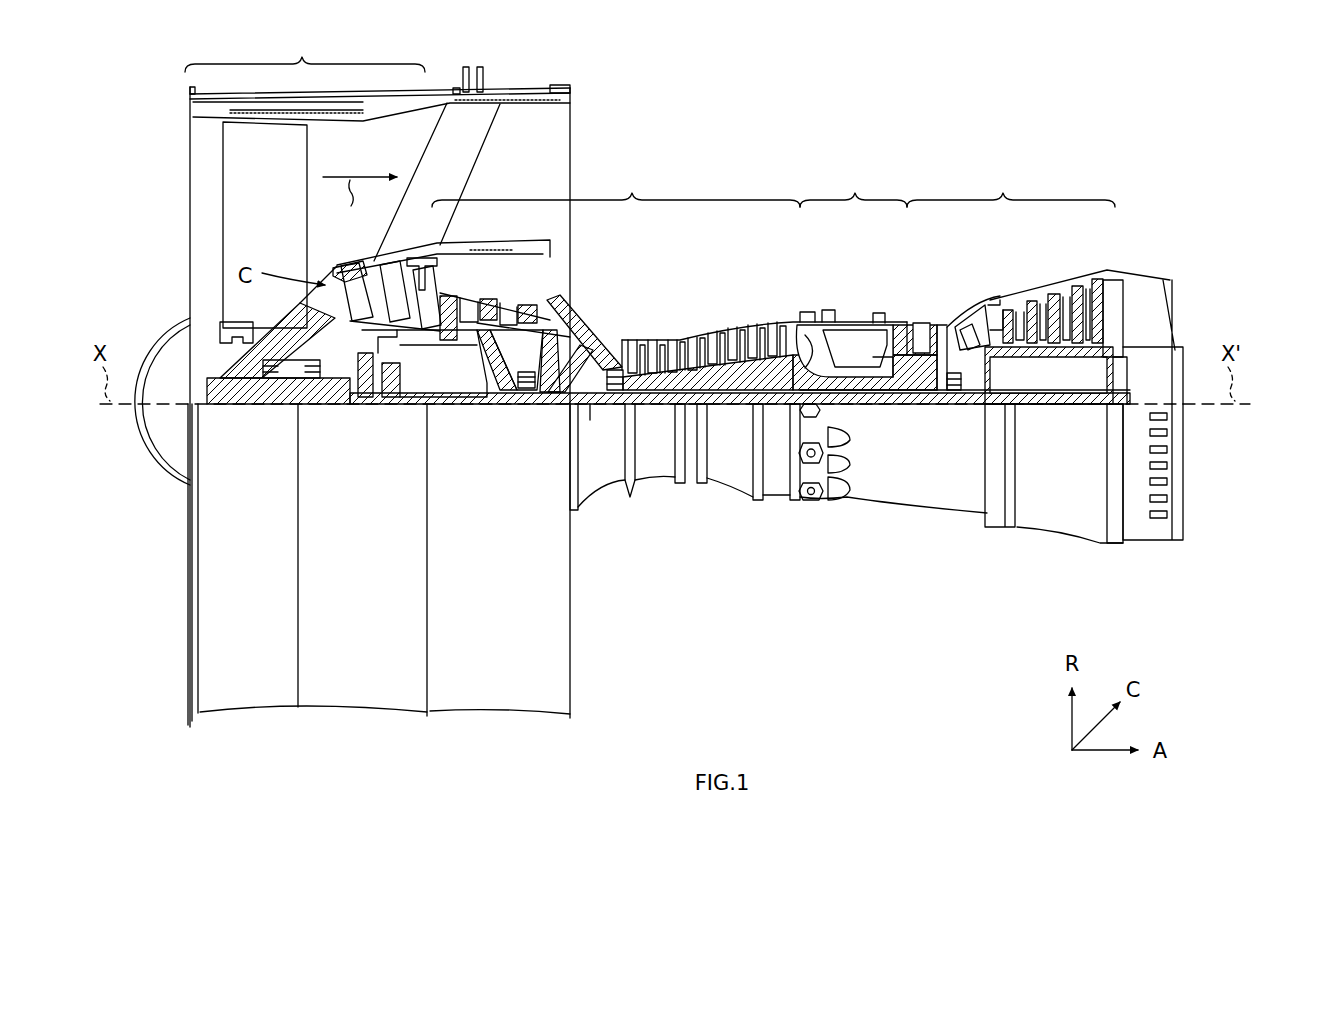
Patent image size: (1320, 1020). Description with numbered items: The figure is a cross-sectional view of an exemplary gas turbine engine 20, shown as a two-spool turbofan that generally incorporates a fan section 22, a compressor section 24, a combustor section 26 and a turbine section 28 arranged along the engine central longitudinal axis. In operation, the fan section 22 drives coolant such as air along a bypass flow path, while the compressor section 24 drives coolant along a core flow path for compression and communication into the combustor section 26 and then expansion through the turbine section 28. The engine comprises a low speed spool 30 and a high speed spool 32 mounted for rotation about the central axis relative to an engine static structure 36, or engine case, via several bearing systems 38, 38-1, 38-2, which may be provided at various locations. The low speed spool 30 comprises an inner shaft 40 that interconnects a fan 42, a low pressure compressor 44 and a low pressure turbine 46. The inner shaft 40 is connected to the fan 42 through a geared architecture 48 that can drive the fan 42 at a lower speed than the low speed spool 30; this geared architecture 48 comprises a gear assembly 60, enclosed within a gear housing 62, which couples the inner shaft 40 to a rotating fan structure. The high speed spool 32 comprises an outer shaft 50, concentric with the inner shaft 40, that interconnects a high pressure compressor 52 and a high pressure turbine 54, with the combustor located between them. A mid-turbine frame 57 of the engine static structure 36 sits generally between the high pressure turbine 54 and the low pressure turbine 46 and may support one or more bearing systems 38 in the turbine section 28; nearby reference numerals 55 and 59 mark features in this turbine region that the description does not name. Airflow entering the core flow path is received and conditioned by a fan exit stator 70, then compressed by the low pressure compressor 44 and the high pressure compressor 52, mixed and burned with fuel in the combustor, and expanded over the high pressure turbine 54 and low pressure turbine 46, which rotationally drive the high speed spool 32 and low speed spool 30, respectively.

The gas turbine engine 20 is at (903, 126).
The fan section 22 is at (352, 380).
The compressor section 24 is at (616, 186).
The combustor section 26 is at (853, 186).
The turbine section 28 is at (1011, 186).
The low speed spool 30 is at (737, 416).
The high speed spool 32 is at (770, 369).
The engine static structure 36 is at (358, 686).
The bearing system 38 is at (972, 372).
The bearing system 38-1 is at (277, 381).
The bearing system 38-2 is at (522, 388).
The inner shaft 40 is at (592, 407).
The fan 42 is at (247, 195).
The low pressure compressor 44 is at (505, 300).
The low pressure turbine 46 is at (1048, 293).
The geared architecture 48 is at (388, 423).
The outer shaft 50 is at (846, 384).
The high pressure compressor 52 is at (717, 367).
The high pressure turbine 54 is at (917, 319).
The mid-turbine frame 55 is at (935, 319).
The mid-turbine frame 57 is at (953, 325).
The airfoils 59 is at (965, 327).
The gear assembly 60 is at (397, 380).
The gear housing 62 is at (392, 347).
The fan exit stator 70 is at (332, 280).